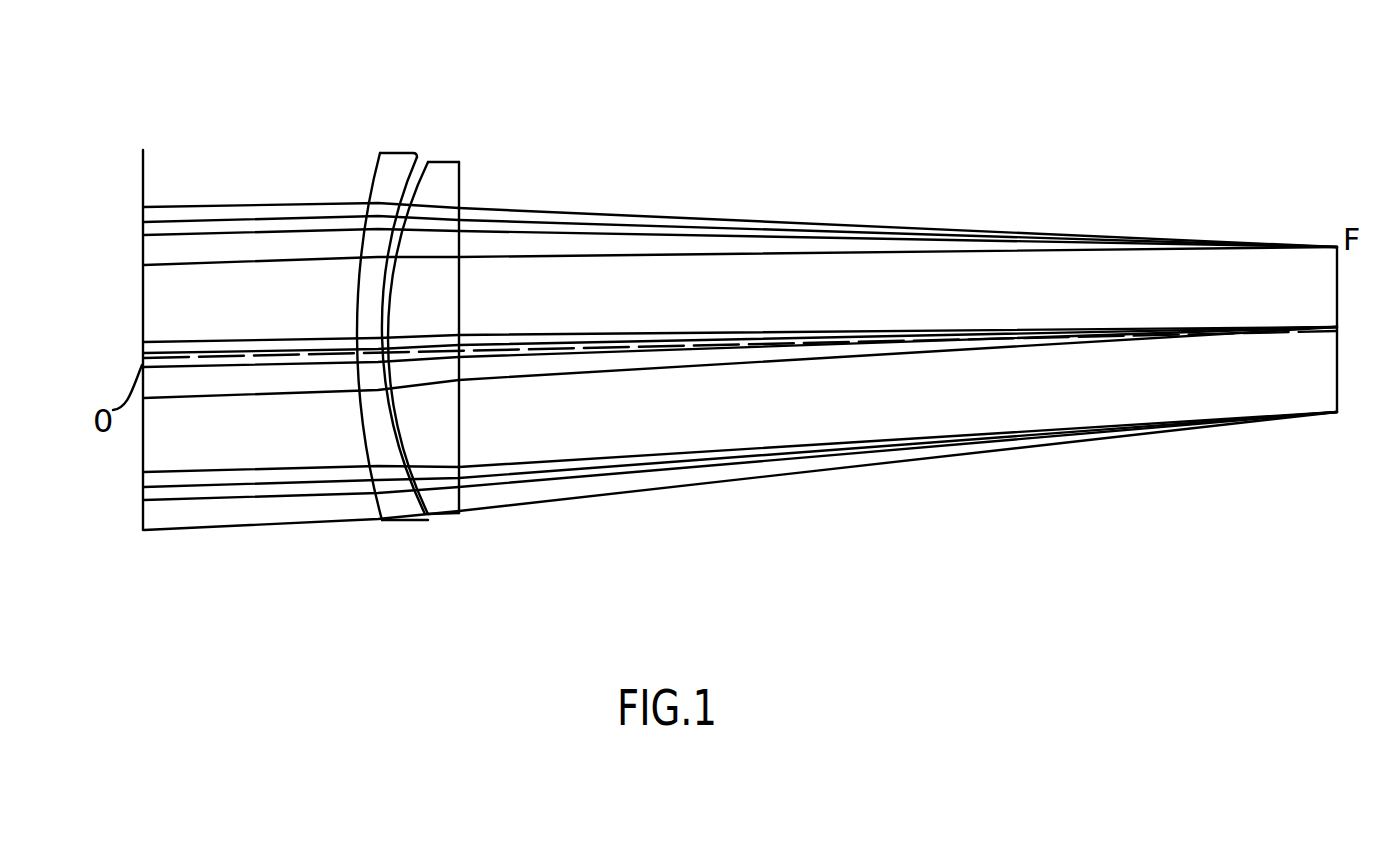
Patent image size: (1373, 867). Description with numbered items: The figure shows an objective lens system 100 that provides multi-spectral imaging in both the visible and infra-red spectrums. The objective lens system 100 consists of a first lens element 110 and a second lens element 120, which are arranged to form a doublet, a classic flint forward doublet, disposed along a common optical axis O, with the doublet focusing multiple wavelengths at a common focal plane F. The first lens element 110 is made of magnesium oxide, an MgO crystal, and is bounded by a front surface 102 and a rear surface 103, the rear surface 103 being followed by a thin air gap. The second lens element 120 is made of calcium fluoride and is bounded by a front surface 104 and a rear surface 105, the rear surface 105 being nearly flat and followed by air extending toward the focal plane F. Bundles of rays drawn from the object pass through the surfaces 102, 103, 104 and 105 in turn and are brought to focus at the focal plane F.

The objective lens system 100 is at (540, 105).
The first surface of the MgO lens element 102 is at (370, 172).
The second surface of the MgO lens element 103 is at (413, 160).
The first surface of the CaF2 lens element 104 is at (427, 163).
The second surface of the CaF2 lens element 105 is at (460, 177).
The first lens element 110 is at (393, 507).
The second lens element 120 is at (453, 503).